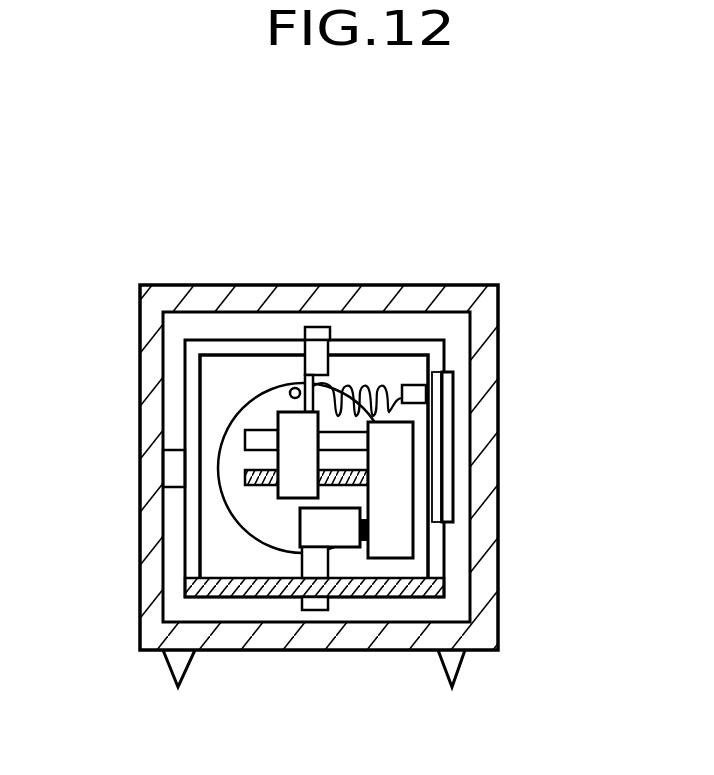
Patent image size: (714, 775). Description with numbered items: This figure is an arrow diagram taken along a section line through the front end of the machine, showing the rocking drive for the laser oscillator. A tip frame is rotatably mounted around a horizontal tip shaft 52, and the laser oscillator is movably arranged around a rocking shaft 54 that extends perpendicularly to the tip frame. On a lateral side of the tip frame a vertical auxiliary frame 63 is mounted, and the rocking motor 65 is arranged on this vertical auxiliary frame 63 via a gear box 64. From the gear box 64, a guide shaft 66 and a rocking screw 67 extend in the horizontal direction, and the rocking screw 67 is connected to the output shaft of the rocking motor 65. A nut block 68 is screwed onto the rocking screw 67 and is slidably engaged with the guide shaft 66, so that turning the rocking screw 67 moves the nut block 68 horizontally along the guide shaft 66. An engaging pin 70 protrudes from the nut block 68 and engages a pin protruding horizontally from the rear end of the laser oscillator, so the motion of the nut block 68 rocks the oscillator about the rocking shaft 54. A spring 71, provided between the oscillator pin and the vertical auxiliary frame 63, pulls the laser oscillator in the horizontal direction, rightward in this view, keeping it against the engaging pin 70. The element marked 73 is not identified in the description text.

The tip shaft 52 is at (165, 450).
The rocking shaft 54 is at (312, 372).
The vertical auxiliary frame 63 is at (455, 456).
The gear box 64 is at (397, 535).
The rocking motor 65 is at (322, 535).
The guide shaft 66 is at (245, 440).
The rocking screw 67 is at (245, 478).
The nut block 68 is at (287, 427).
The engaging pin 70 is at (330, 383).
The spring 71 is at (370, 392).
The inner frame 73 is at (412, 338).